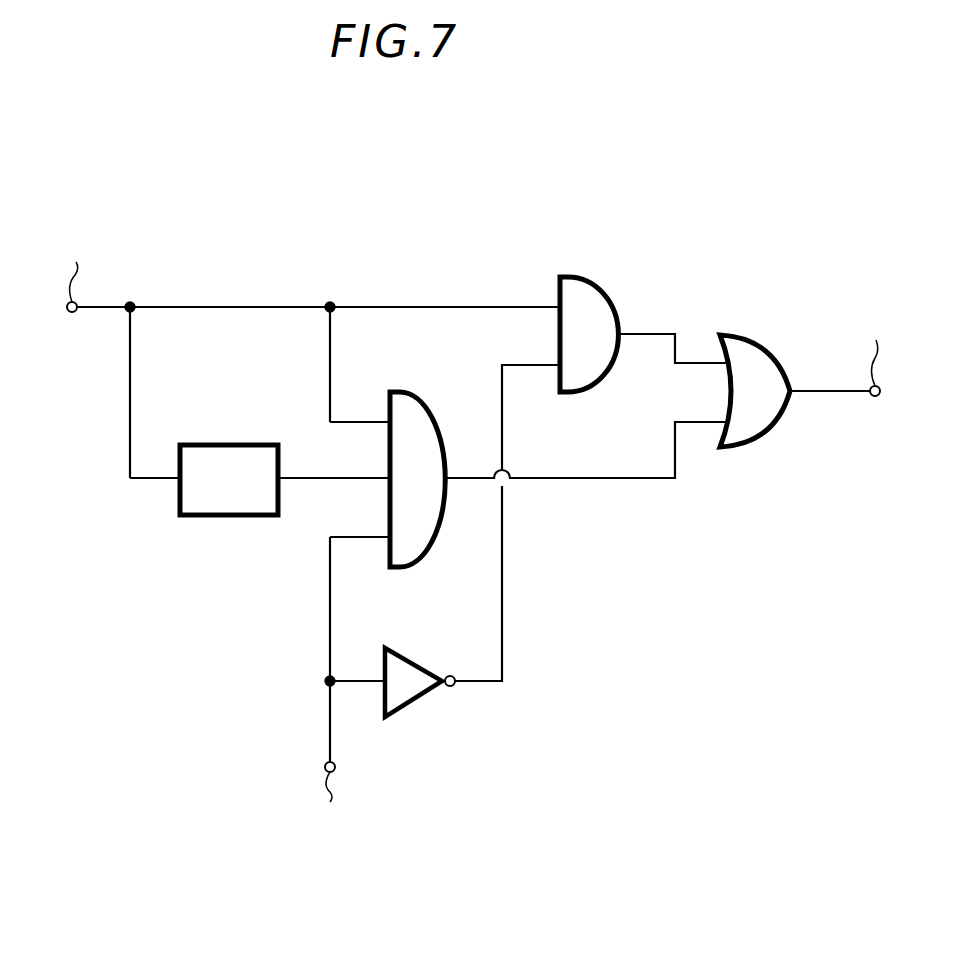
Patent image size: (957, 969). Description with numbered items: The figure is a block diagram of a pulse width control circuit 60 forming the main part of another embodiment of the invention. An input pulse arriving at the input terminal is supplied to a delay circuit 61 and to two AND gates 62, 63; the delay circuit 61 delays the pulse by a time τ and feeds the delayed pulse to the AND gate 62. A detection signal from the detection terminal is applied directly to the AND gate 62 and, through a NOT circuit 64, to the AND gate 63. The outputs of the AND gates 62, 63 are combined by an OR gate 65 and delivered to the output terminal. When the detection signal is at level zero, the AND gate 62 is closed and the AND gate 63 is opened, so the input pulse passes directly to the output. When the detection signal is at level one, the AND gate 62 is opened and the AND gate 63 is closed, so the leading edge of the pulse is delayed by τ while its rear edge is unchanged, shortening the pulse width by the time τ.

The pulse width control circuit 60 is at (379, 221).
The delay circuit 61 is at (228, 516).
The AND gate 62 is at (430, 543).
The AND gate 63 is at (600, 375).
The NOT circuit 64 is at (420, 698).
The OR gate 65 is at (750, 449).